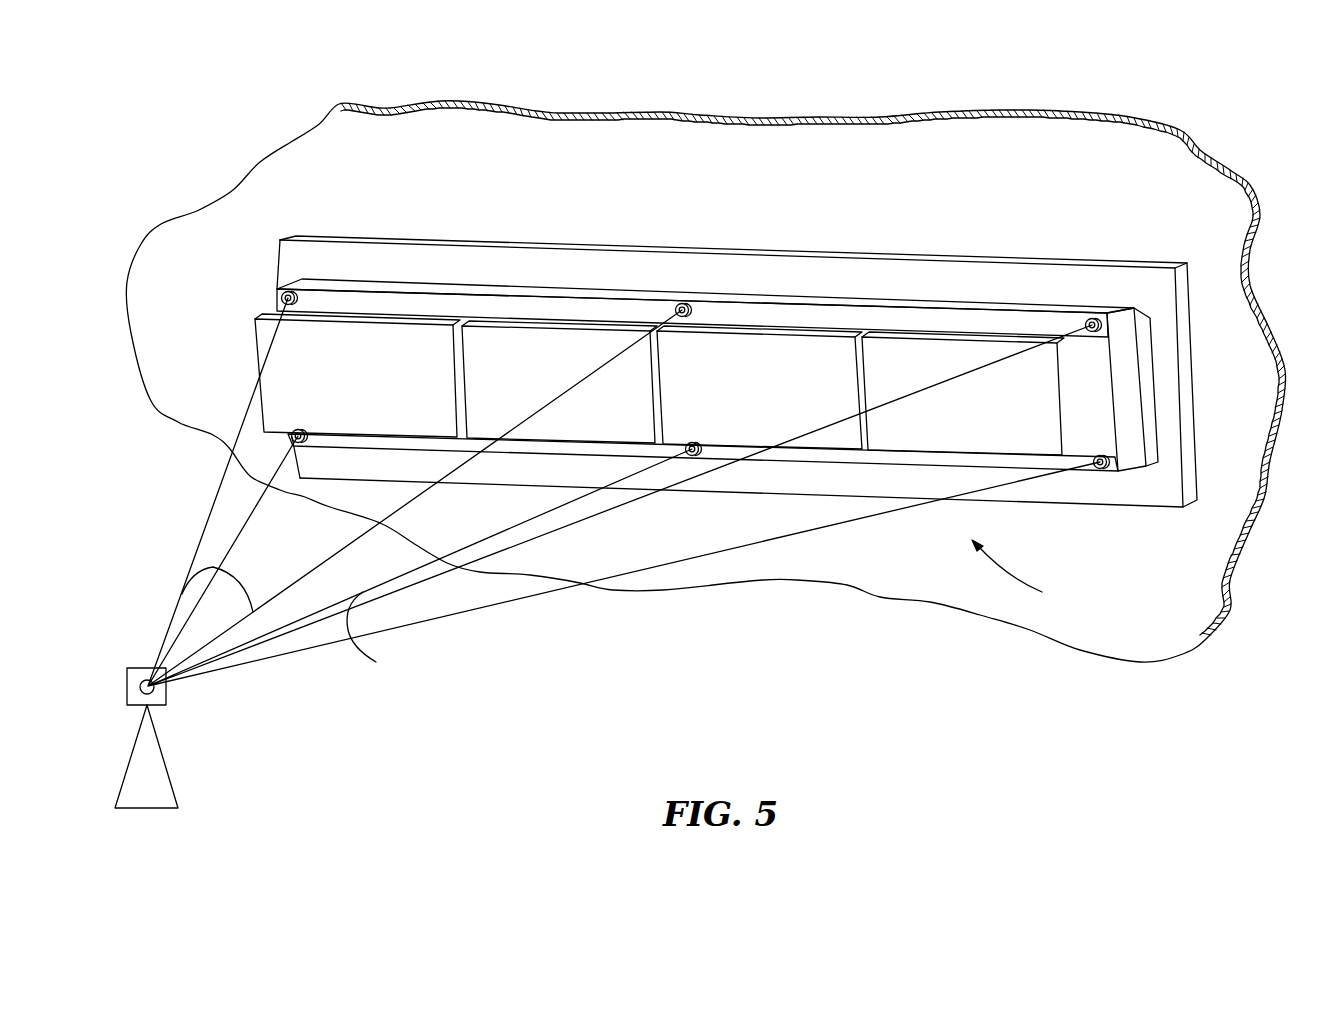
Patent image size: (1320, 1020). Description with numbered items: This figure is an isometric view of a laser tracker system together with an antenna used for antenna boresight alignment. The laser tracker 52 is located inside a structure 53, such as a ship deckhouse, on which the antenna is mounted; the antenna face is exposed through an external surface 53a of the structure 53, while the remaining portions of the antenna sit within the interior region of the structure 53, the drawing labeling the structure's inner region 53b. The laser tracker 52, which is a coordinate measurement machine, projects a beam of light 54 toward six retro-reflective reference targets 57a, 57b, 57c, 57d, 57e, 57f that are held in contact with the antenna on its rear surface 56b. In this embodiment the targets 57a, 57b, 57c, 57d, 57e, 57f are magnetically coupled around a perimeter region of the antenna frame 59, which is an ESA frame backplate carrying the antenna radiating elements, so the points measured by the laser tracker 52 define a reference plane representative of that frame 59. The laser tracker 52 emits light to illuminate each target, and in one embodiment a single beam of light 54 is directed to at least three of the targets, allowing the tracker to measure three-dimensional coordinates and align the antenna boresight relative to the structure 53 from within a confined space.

The laser tracker 52 is at (178, 778).
The structure 53 is at (999, 109).
The external surface 53a is at (540, 109).
The wall surface region 53b is at (956, 164).
The beam of light 54 is at (210, 567).
The rear surface 56b is at (1032, 578).
The target 57a is at (279, 295).
The target 57b is at (290, 437).
The target 57c is at (682, 302).
The target 57d is at (692, 457).
The target 57e is at (1090, 318).
The target 57f is at (1100, 470).
The antenna frame 59 is at (428, 303).